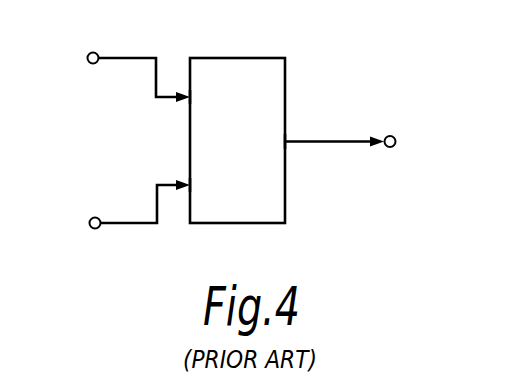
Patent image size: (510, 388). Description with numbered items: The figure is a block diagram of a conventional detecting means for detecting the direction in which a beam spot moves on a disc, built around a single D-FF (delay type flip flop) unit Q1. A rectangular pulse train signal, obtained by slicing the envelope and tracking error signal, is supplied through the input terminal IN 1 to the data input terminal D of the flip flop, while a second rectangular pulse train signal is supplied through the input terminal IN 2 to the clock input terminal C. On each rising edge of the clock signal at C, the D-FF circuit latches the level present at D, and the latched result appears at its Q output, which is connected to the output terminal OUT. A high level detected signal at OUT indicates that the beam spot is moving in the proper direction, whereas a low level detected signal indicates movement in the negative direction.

The D-FF unit Q1 is at (237, 120).
The data input terminal D is at (204, 99).
The clock input terminal C is at (204, 189).
The D-FF circuit Q is at (271, 145).
The input terminal IN 1 is at (112, 73).
The input terminal IN 2 is at (112, 209).
The output terminal OUT is at (396, 139).